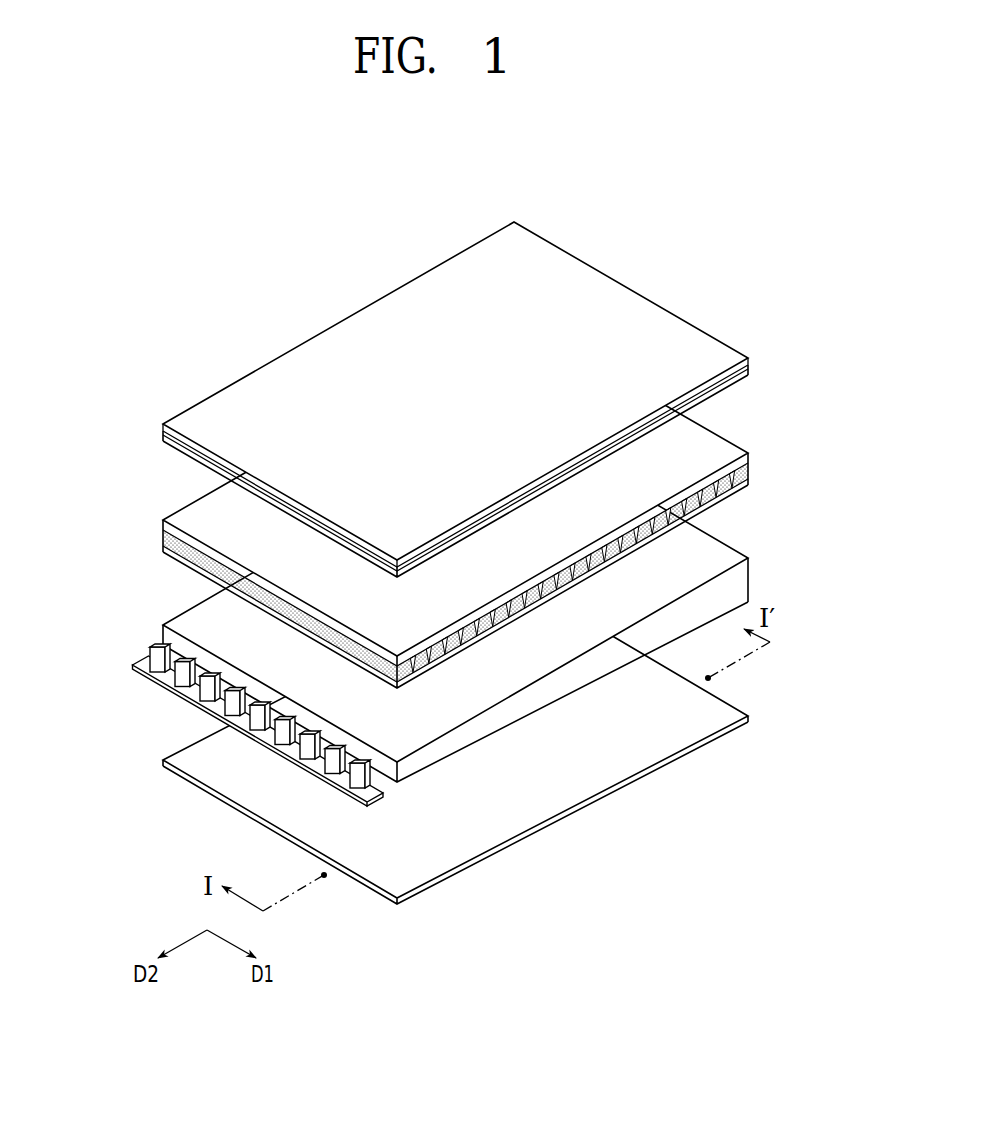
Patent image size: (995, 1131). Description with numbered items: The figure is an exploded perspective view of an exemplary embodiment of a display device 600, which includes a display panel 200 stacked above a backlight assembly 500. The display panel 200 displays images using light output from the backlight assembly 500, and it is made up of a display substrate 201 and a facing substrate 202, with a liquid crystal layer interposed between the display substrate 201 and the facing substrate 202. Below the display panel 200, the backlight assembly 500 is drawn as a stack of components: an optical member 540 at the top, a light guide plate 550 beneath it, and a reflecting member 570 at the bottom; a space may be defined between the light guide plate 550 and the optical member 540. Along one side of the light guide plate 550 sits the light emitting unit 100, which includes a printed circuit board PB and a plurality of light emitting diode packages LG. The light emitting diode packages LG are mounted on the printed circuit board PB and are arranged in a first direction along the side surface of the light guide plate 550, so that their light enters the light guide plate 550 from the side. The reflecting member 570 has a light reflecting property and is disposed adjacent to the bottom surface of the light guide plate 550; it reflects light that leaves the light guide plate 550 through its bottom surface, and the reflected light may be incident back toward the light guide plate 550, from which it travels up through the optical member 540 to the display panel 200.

The display device 600 is at (623, 239).
The display panel 200 is at (524, 399).
The display substrate 201 is at (743, 377).
The facing substrate 202 is at (708, 361).
The backlight assembly 500 is at (827, 413).
The optical member 540 is at (709, 450).
The light guide plate 550 is at (708, 557).
The reflecting member 570 is at (718, 712).
The light emitting unit 100 is at (200, 725).
The light emitting diode packages LG is at (148, 661).
The printed circuit board PB is at (140, 675).